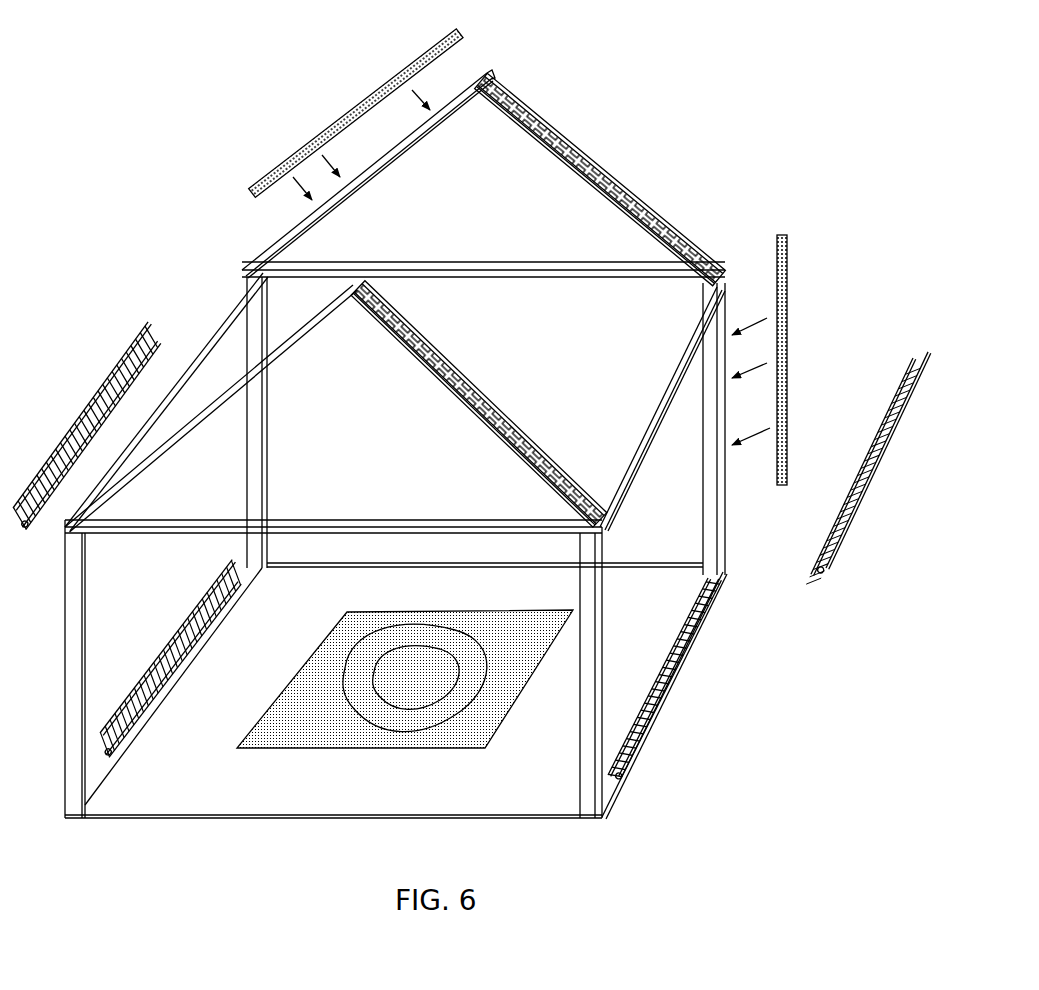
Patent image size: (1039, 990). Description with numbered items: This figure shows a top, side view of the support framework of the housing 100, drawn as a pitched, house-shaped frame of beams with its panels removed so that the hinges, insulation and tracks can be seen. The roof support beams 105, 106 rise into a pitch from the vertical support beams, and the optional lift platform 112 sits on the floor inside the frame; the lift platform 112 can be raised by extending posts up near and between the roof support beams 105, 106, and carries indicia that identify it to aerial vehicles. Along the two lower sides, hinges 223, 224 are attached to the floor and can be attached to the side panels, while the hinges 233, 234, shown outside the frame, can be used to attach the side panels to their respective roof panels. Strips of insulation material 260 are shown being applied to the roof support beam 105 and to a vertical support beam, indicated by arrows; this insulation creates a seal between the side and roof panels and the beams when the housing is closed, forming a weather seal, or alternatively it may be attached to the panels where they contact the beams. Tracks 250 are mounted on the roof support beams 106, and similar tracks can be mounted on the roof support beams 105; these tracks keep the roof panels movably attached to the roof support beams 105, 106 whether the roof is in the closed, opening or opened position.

The housing 100 is at (130, 136).
The roof support beam 105 is at (368, 173).
The roof support beam 106 is at (525, 130).
The tracks 250 is at (622, 185).
The insulation material 260 is at (356, 108).
The hinge 233 is at (90, 392).
The hinge 234 is at (845, 540).
The hinge 223 is at (140, 735).
The hinge 224 is at (668, 690).
The lift platform 112 is at (430, 740).